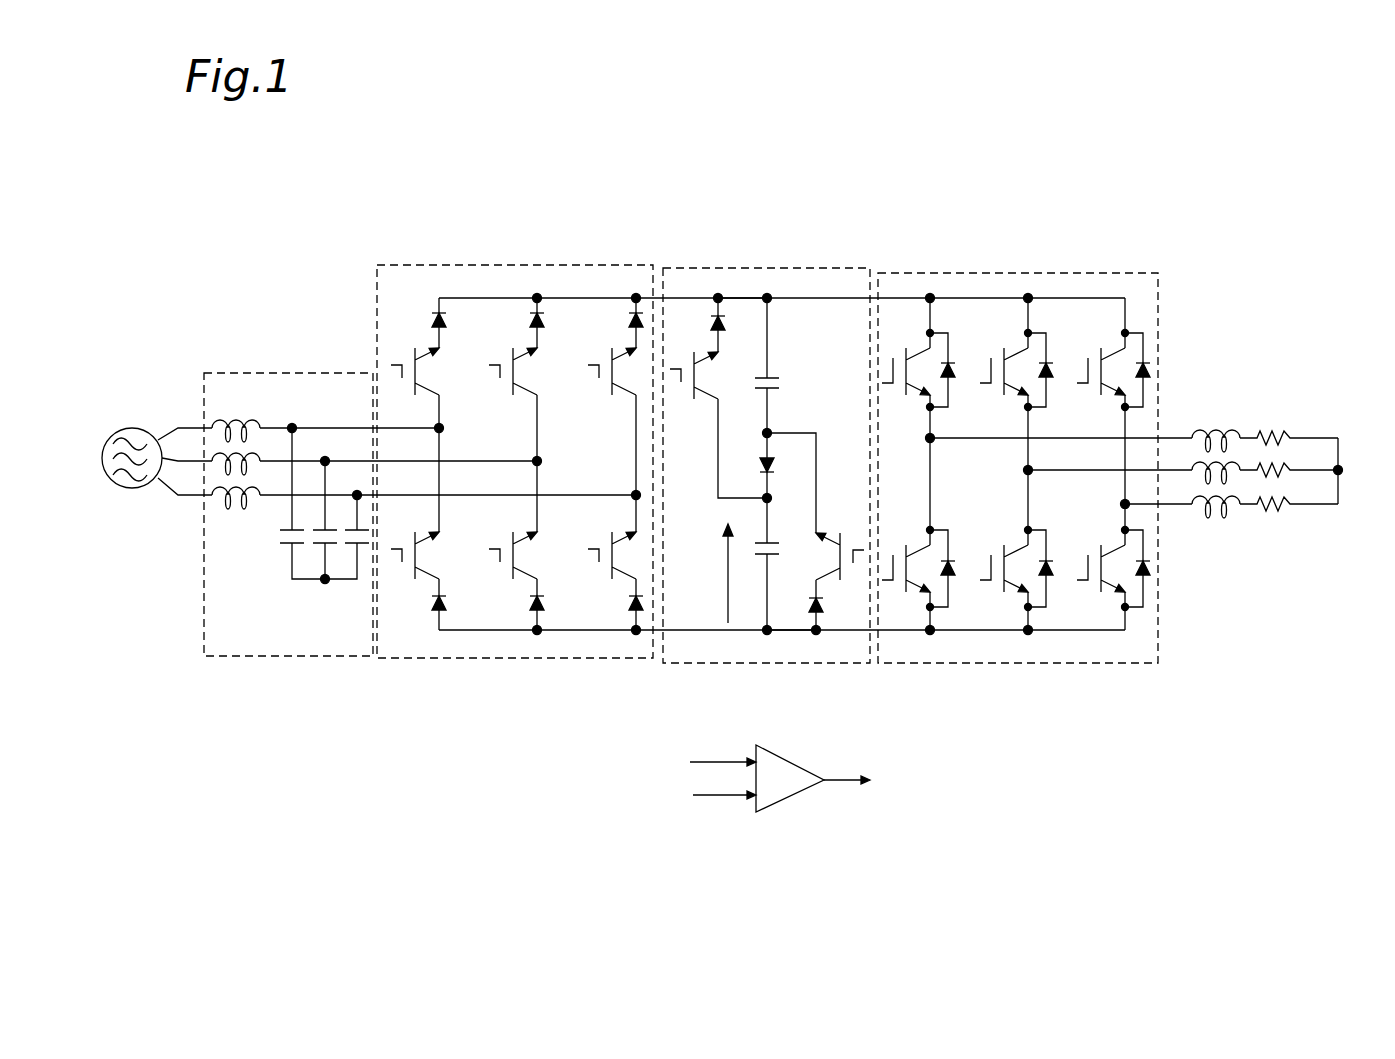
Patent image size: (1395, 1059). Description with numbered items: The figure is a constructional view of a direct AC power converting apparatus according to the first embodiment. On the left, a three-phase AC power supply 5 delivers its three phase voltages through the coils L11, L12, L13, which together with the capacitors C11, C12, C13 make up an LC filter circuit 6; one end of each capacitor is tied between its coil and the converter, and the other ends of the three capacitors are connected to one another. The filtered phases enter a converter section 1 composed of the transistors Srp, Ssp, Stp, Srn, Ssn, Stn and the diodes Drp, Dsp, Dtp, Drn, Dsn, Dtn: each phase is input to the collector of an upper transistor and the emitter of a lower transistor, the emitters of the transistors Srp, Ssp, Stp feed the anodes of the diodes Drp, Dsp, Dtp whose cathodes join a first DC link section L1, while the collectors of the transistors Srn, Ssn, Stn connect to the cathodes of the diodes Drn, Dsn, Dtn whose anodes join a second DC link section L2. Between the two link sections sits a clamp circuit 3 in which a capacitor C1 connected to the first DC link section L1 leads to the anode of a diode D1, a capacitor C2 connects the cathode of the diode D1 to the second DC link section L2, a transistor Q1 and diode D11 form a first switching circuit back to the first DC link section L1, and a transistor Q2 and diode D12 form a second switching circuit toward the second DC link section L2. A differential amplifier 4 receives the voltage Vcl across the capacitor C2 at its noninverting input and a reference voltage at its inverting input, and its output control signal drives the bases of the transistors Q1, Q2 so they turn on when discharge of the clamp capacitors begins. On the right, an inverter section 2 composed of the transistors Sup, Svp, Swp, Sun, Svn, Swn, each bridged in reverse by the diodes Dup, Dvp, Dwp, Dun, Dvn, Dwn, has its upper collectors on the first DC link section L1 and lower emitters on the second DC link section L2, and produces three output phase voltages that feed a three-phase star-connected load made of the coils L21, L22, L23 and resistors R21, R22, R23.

The converter section 1 is at (522, 262).
The inverter section 2 is at (1032, 265).
The clamp circuit 3 is at (774, 262).
The differential amplifier 4 is at (793, 795).
The three-phase AC power supply 5 is at (124, 488).
The LC filter circuit 6 is at (283, 365).
The first DC link section L1 is at (812, 298).
The second DC link section L2 is at (790, 632).
The coil L11 is at (237, 415).
The coil L12 is at (252, 452).
The coil L13 is at (237, 511).
The capacitor C11 is at (286, 505).
The capacitor C12 is at (313, 538).
The capacitor C13 is at (346, 570).
The transistor Q1 is at (718, 398).
The transistor Q2 is at (815, 531).
The diode D11 is at (741, 336).
The diode D12 is at (795, 594).
The diode D1 is at (786, 465).
The capacitor C1 is at (788, 365).
The capacitor C2 is at (785, 564).
The voltage Vcl is at (706, 573).
The coil L21 is at (1216, 424).
The coil L22 is at (1200, 460).
The coil L23 is at (1216, 522).
The resistor R21 is at (1289, 421).
The resistor R22 is at (1289, 461).
The resistor R23 is at (1289, 522).
The transistor Srp is at (409, 388).
The transistor Ssp is at (506, 388).
The transistor Stp is at (604, 388).
The transistor Srn is at (411, 543).
The transistor Ssn is at (506, 543).
The transistor Stn is at (604, 543).
The diode Drp is at (422, 329).
The diode Dsp is at (517, 329).
The diode Dtp is at (615, 329).
The diode Drn is at (423, 615).
The diode Dsn is at (521, 615).
The diode Dtn is at (619, 615).
The transistor Sup is at (906, 392).
The transistor Svp is at (1002, 392).
The transistor Swp is at (1095, 392).
The transistor Sun is at (906, 594).
The transistor Svn is at (1001, 594).
The transistor Swn is at (1095, 594).
The diode Dup is at (964, 365).
The diode Dvp is at (1059, 365).
The diode Dwp is at (1143, 341).
The diode Dun is at (967, 565).
The diode Dvn is at (1061, 565).
The diode Dwn is at (1143, 601).